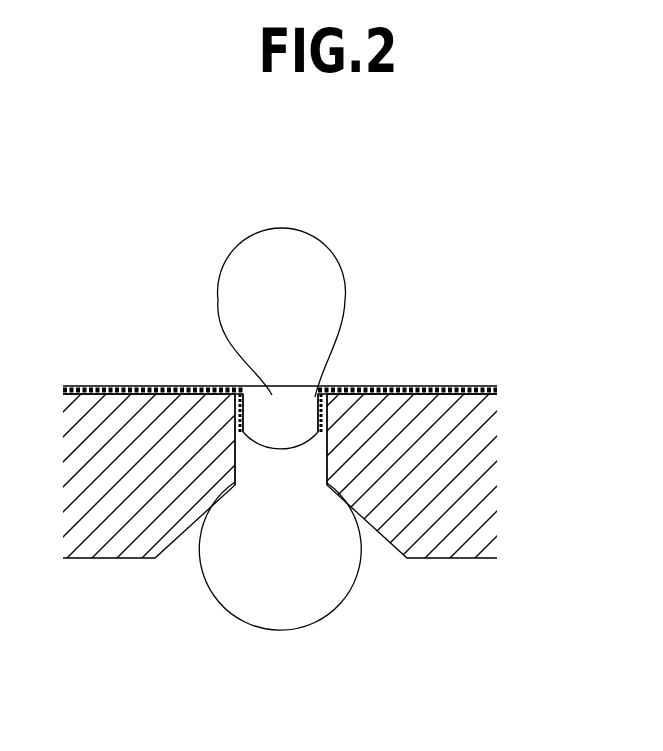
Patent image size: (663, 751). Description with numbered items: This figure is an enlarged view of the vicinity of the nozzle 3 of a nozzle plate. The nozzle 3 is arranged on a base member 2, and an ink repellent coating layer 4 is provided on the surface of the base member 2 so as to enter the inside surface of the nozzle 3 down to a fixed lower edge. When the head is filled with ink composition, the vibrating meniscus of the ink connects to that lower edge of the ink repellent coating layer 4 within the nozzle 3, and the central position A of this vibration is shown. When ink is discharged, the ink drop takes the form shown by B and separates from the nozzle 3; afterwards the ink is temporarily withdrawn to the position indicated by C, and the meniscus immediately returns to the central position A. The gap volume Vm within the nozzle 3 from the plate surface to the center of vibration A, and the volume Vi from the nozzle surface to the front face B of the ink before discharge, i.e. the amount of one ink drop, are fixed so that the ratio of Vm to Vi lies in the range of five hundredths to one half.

The base member 2 is at (483, 463).
The nozzle 3 is at (243, 382).
The ink repellent coating layer 4 is at (467, 390).
The central position of meniscus vibration A is at (283, 455).
The front face of the ink prior to discharge B is at (281, 227).
The withdrawn ink position C is at (288, 632).
The ink drop volume Vi is at (323, 292).
The gap volume within the nozzle Vm is at (301, 403).